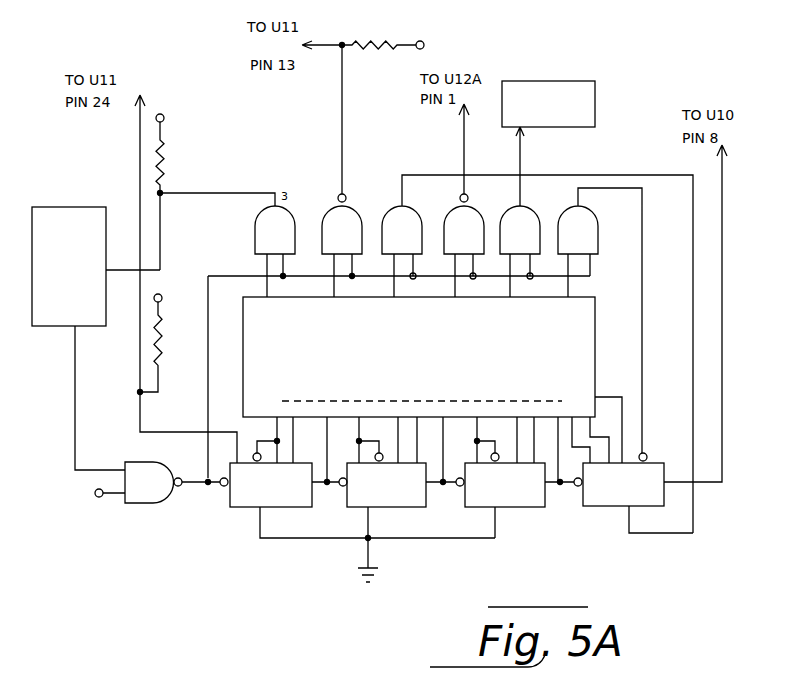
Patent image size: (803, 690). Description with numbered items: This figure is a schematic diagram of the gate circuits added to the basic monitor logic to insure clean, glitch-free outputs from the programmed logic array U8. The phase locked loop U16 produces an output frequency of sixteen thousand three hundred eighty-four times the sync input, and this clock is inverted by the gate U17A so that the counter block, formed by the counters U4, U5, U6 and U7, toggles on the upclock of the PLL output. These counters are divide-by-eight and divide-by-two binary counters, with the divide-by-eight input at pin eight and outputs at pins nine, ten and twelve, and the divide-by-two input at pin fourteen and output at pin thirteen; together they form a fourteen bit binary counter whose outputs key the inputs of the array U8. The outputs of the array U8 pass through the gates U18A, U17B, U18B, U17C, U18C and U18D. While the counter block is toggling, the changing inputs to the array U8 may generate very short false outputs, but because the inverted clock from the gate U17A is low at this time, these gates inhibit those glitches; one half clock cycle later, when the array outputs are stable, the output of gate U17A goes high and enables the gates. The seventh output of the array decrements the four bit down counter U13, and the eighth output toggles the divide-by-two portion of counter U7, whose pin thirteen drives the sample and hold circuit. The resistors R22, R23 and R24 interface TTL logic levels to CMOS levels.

The phase locked loop U16 is at (96, 338).
The gate U17A is at (149, 480).
The gate U17B is at (342, 240).
The gate U17C is at (464, 240).
The gate U18A is at (275, 251).
The gate U18B is at (537, 354).
The gate U18C is at (520, 240).
The gate U18D is at (599, 320).
The programmed logic array U8 is at (432, 382).
The counter U4 is at (357, 493).
The counter U5 is at (394, 515).
The counter U6 is at (511, 493).
The counter U7 is at (633, 491).
The four bit down counter U13 is at (548, 143).
The resistor R22 is at (164, 336).
The resistor R23 is at (173, 184).
The resistor R24 is at (370, 46).